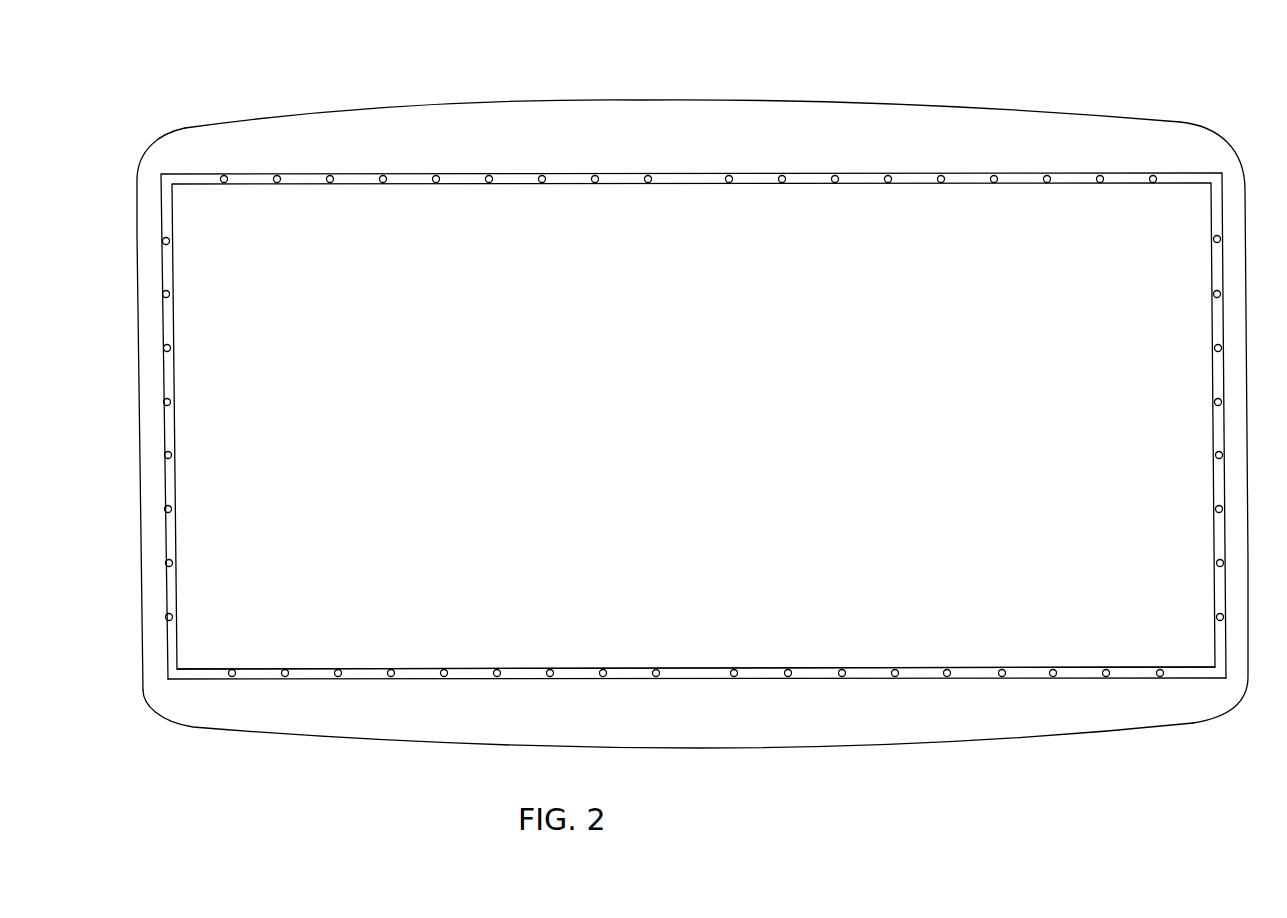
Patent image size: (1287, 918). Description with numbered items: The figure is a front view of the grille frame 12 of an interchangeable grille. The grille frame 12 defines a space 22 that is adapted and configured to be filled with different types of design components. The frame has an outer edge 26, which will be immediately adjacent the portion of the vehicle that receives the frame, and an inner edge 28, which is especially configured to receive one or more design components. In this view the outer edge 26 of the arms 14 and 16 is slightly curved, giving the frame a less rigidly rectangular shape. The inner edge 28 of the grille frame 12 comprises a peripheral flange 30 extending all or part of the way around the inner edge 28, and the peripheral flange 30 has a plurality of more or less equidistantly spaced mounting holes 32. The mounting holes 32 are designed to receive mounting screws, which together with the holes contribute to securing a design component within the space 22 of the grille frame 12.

The grille frame 12 is at (691, 416).
The arm 14 is at (195, 140).
The arm 16 is at (364, 728).
The space 22 is at (283, 419).
The outer edge 26 is at (342, 110).
The inner edge 28 is at (693, 426).
The peripheral flange 30 is at (470, 667).
The mounting holes 32 is at (390, 669).